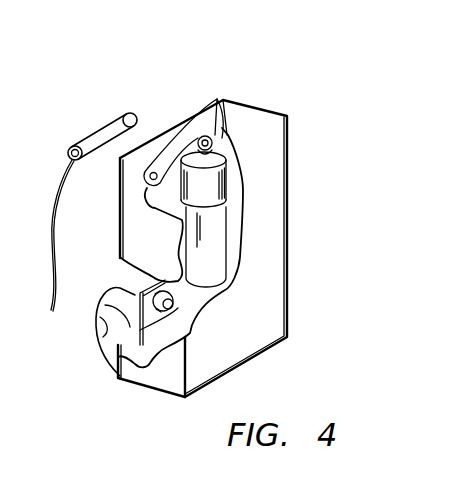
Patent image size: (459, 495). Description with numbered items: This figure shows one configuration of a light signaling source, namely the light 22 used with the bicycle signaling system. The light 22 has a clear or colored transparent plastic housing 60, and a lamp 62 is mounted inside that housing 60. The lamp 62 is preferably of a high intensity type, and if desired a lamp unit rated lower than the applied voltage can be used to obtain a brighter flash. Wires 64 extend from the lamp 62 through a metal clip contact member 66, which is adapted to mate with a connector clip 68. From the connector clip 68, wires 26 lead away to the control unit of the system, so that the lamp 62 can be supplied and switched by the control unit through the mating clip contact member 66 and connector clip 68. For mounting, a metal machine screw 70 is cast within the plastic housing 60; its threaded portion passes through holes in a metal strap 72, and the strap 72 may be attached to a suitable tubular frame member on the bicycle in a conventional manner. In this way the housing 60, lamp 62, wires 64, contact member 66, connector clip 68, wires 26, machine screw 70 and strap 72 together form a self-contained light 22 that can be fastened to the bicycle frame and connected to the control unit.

The light 22 is at (308, 79).
The wires 26 is at (60, 273).
The transparent plastic housing 60 is at (257, 117).
The lamp 62 is at (217, 242).
The wires 64 is at (217, 99).
The metal clip contact member 66 is at (183, 146).
The connector clip 68 is at (90, 142).
The metal machine screw 70 is at (180, 305).
The metal strap 72 is at (103, 338).